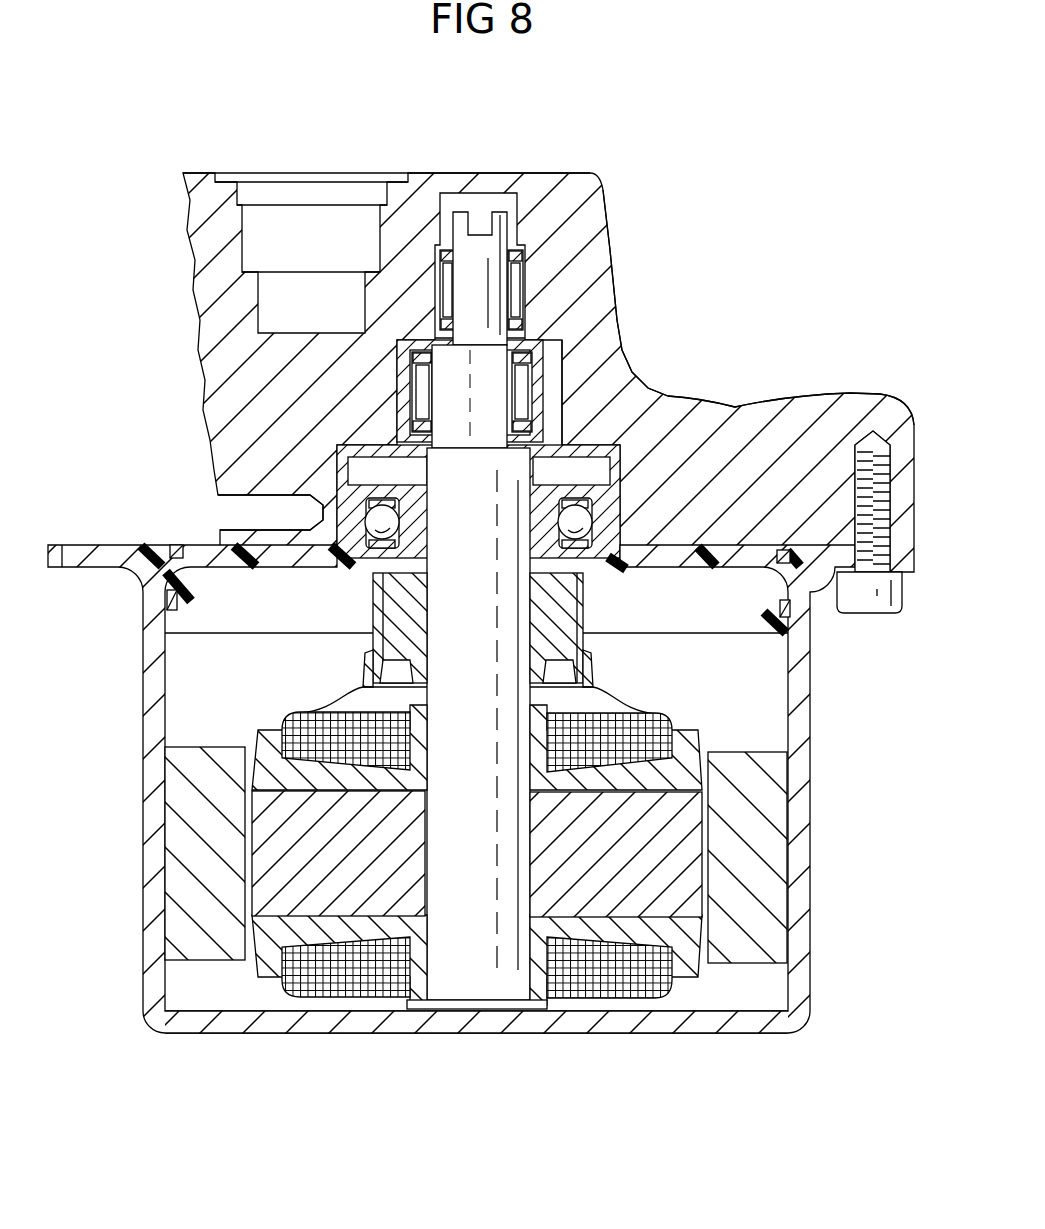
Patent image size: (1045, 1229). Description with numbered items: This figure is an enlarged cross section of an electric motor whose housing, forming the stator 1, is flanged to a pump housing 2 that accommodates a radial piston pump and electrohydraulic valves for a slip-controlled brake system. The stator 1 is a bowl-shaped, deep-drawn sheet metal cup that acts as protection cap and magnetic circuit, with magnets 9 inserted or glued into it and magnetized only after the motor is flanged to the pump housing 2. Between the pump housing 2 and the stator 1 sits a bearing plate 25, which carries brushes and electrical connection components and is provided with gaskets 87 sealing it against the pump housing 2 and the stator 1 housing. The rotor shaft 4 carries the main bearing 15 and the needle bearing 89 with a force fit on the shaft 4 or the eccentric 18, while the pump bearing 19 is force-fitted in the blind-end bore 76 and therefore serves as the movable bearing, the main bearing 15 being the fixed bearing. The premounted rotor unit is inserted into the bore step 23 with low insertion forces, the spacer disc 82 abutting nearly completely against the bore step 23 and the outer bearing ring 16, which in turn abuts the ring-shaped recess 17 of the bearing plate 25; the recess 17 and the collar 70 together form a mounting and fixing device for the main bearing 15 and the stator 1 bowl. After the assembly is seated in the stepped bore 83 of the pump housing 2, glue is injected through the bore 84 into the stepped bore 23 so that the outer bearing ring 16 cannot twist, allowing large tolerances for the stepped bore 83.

The stator 1 is at (727, 1030).
The pump housing 2 is at (553, 190).
The shaft 4 is at (452, 992).
The magnets 9 is at (775, 908).
The main bearing 15 is at (640, 540).
The outer bearing ring 16 is at (615, 498).
The ring-shaped recess 17 is at (598, 553).
The eccentric 18 is at (450, 362).
The pump bearing 19 is at (513, 282).
The bore step 23 is at (345, 462).
The bearing plate 25 is at (738, 543).
The collar 70 is at (784, 640).
The blind-end bore 76 is at (480, 207).
The spacer disc 82 is at (597, 452).
The stepped bore 83 is at (560, 366).
The bore 84 is at (235, 504).
The gaskets 87 is at (177, 538).
The needle bearing 89 is at (408, 388).